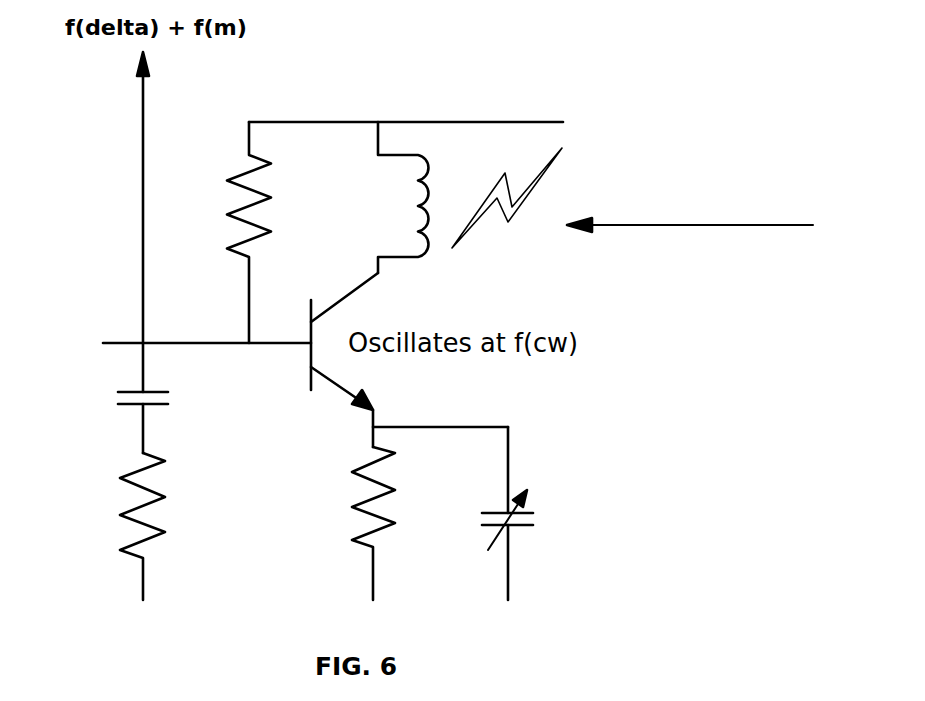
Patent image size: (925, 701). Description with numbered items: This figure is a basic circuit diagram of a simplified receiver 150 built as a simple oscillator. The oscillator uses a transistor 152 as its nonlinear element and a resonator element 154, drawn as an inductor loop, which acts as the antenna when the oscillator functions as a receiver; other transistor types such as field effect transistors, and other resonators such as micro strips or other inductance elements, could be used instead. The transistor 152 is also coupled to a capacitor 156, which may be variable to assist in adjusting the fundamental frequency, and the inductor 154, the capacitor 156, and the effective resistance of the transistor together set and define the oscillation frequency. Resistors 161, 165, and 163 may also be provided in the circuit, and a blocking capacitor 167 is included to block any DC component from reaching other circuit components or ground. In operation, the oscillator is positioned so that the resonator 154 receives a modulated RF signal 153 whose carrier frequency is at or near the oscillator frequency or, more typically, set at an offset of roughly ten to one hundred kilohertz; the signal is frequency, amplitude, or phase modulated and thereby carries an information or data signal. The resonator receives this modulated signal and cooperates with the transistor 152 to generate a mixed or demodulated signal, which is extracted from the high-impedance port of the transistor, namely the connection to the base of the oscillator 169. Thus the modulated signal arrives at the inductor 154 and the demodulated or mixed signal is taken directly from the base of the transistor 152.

The receiver 150 is at (790, 45).
The transistor 152 is at (307, 378).
The modulated RF signal 153 is at (660, 225).
The resonator element 154 is at (412, 207).
The capacitor 156 is at (533, 520).
The resistor 161 is at (375, 549).
The resistor 163 is at (145, 560).
The resistor 165 is at (260, 170).
The blocking capacitor 167 is at (125, 392).
The base connection of the oscillator 169 is at (140, 172).